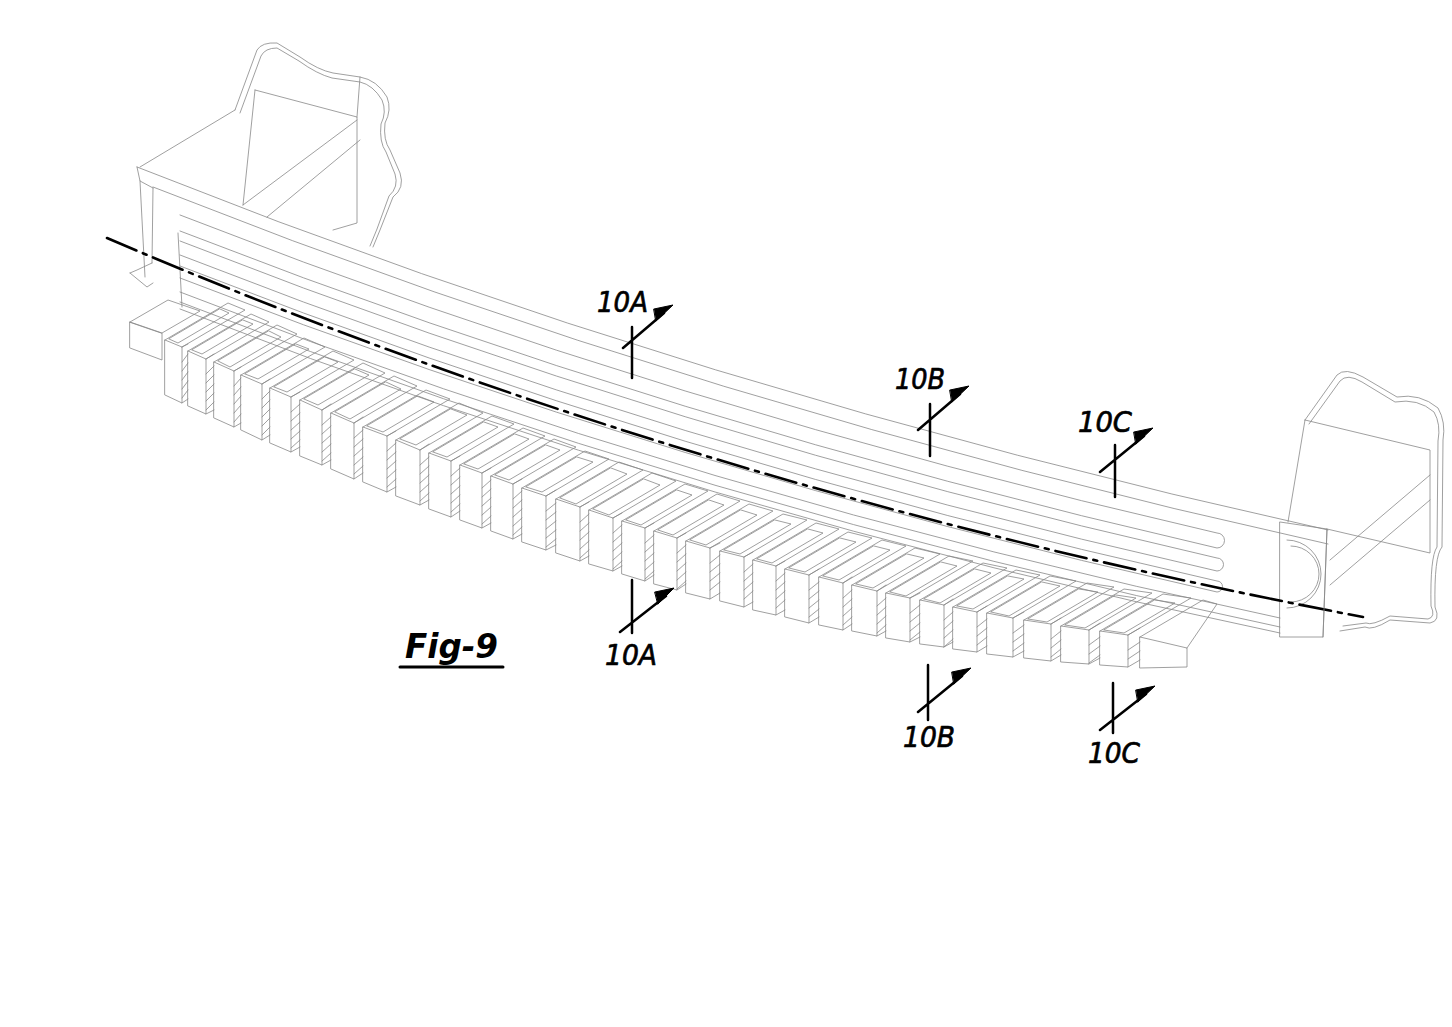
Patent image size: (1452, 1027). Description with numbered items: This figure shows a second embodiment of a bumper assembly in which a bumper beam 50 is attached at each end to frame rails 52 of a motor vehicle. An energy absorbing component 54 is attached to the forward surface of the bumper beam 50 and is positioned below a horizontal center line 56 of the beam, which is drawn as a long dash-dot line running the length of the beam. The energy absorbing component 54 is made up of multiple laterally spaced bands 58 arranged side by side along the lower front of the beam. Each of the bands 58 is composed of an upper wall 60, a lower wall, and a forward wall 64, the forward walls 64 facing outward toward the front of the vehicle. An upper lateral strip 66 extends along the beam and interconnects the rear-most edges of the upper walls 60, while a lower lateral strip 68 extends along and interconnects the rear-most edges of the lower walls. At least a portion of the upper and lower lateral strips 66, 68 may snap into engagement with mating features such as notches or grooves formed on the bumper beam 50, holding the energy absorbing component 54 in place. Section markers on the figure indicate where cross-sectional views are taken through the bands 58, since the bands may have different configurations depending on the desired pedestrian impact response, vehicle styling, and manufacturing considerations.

The bumper beam 50 is at (572, 319).
The frame rails 52 is at (240, 155).
The energy absorbing component 54 is at (713, 628).
The horizontal center line 56 is at (1343, 612).
The bands 58 is at (403, 500).
The upper wall 60 is at (437, 425).
The forward wall 64 is at (405, 465).
The upper lateral strip 66 is at (794, 517).
The lower lateral strip 68 is at (1047, 603).